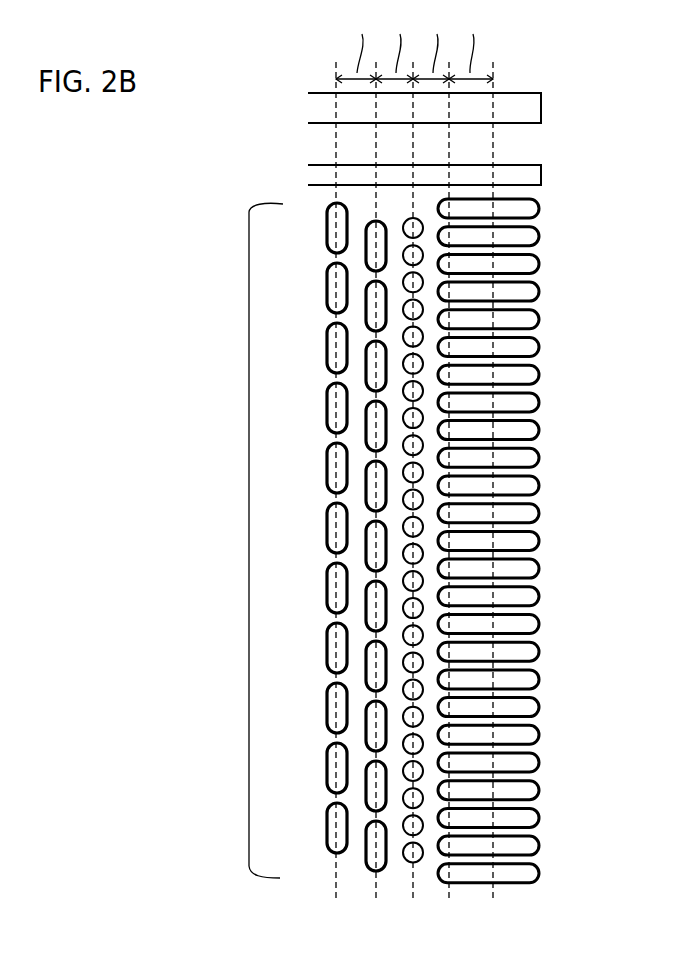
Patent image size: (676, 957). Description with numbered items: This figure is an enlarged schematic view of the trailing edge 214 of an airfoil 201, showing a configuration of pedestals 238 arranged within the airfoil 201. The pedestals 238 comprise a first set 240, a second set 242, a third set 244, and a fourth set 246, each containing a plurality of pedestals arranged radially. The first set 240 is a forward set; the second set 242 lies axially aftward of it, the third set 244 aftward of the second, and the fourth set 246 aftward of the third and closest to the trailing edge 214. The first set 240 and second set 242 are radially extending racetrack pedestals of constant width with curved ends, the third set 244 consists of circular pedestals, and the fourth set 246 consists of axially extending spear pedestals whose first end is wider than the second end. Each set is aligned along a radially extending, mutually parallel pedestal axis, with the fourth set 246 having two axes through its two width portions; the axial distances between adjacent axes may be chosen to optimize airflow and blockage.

The airfoil 201 is at (116, 221).
The trailing edge 214 is at (542, 107).
The pedestals 238 is at (249, 543).
The first set of pedestals 240 is at (327, 284).
The second set of pedestals 242 is at (375, 363).
The third set of pedestals 244 is at (418, 388).
The fourth set of pedestals 246 is at (540, 316).